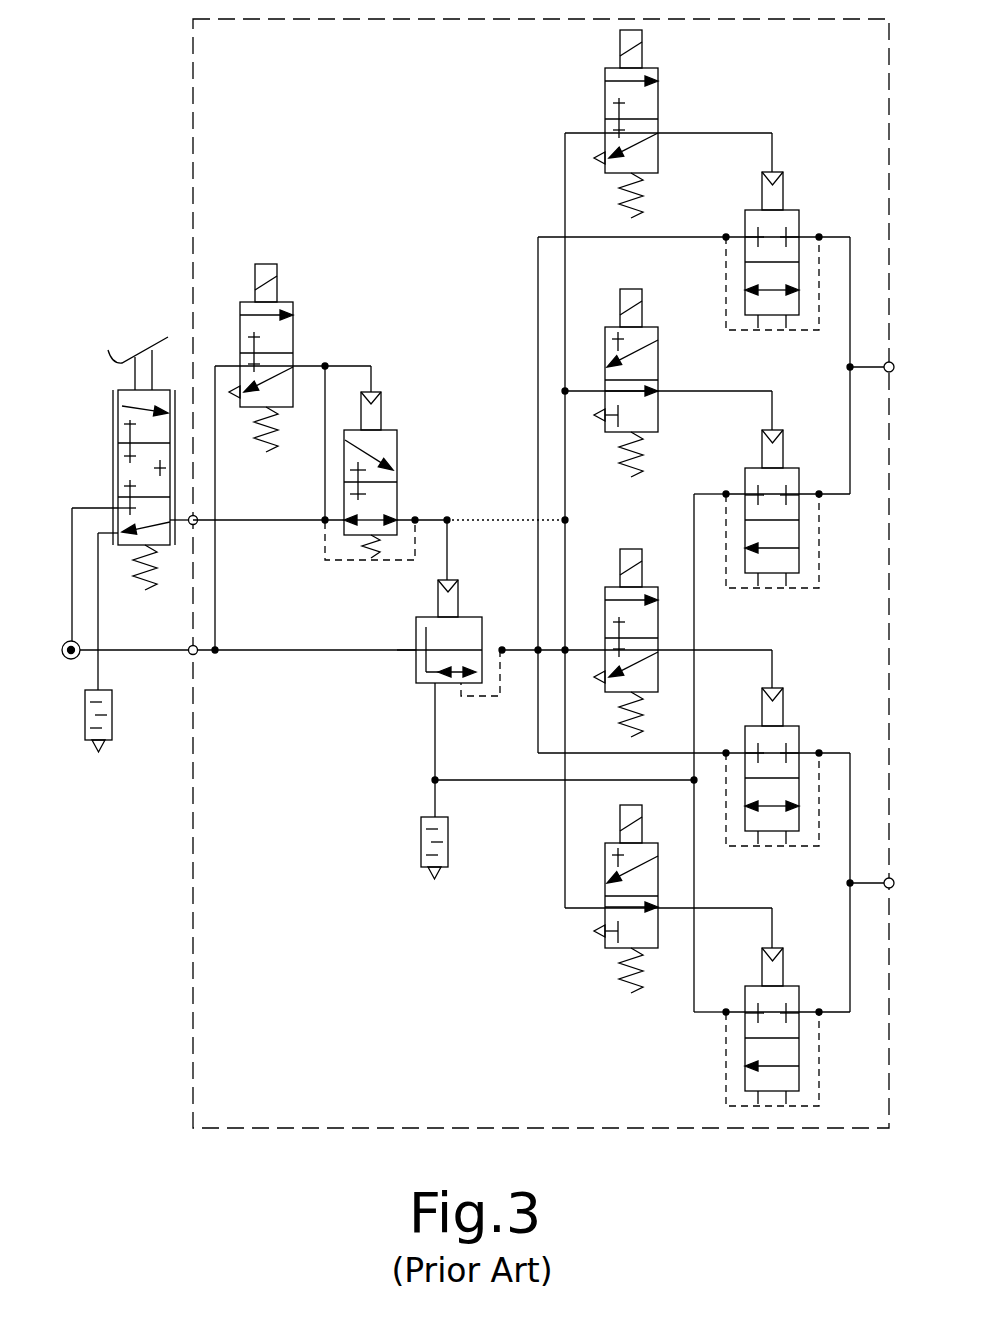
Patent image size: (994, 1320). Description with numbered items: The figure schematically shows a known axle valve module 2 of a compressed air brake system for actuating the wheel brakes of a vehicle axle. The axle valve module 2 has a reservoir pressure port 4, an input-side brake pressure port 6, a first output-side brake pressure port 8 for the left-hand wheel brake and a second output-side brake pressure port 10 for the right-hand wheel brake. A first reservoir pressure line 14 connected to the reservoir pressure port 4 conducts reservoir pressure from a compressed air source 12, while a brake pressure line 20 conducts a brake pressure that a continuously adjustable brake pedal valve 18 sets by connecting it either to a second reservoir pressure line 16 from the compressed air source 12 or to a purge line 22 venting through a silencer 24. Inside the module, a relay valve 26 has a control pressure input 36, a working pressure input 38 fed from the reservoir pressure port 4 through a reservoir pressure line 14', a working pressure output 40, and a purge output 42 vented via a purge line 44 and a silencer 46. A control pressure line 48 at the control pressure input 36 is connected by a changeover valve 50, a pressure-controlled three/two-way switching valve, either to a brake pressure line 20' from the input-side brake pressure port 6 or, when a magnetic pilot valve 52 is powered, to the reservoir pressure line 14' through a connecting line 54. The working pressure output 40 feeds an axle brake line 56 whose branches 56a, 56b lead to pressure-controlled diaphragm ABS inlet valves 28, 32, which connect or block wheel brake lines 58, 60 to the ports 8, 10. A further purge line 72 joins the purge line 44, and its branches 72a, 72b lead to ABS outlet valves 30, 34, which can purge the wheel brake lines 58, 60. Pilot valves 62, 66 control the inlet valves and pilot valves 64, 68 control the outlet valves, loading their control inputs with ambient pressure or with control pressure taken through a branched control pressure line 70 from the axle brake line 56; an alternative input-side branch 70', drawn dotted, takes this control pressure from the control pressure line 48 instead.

The axle valve module 2 is at (190, 917).
The reservoir pressure port 4 is at (195, 655).
The input-side brake pressure port 6 is at (197, 520).
The first output-side brake pressure port 8 is at (886, 361).
The second output-side brake pressure port 10 is at (884, 875).
The compressed air source 12 is at (72, 662).
The first reservoir pressure line 14 is at (136, 704).
The reservoir pressure line 14' is at (304, 704).
The second reservoir pressure line 16 is at (90, 507).
The brake pedal valve 18 is at (97, 418).
The brake pressure line 20 is at (260, 443).
The brake pressure line 20' is at (268, 488).
The purge line 22 is at (100, 612).
The silencer 24 is at (115, 730).
The relay valve 26 is at (467, 615).
The ABS inlet valve 28 is at (715, 262).
The ABS outlet valve 30 is at (715, 520).
The ABS inlet valve 32 is at (815, 740).
The ABS outlet valve 34 is at (715, 1037).
The control pressure input 36 is at (437, 598).
The working pressure input 38 is at (410, 652).
The working pressure output 40 is at (482, 652).
The purge output 42 is at (416, 738).
The purge line 44 is at (433, 795).
The silencer 46 is at (420, 848).
The control pressure line 48 is at (437, 516).
The changeover valve 50 is at (412, 443).
The pilot valve 52 is at (313, 320).
The connecting line 54 is at (217, 572).
The axle brake line 56 is at (520, 642).
The branch of the axle brake line 56a is at (536, 320).
The branch of the axle brake line 56b is at (535, 757).
The wheel brake line 58 is at (866, 370).
The wheel brake line 60 is at (865, 890).
The pilot valve 62 is at (675, 116).
The pilot valve 64 is at (675, 376).
The pilot valve 66 is at (675, 635).
The pilot valve 68 is at (675, 893).
The branched control pressure line 70 is at (575, 714).
The input-side branch of the control pressure line 70' is at (532, 326).
The further purge line 72 is at (540, 783).
The branch of the purge line 72a is at (693, 507).
The branch of the purge line 72b is at (692, 993).